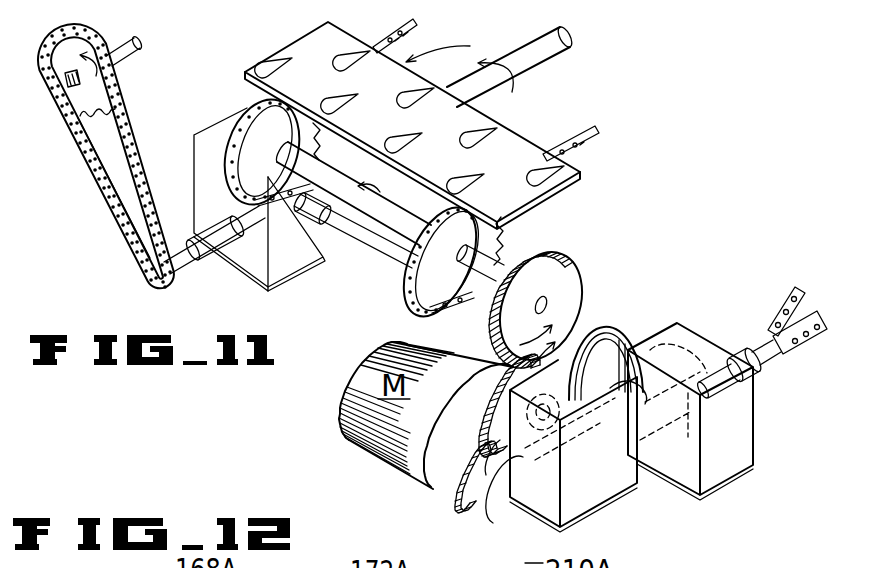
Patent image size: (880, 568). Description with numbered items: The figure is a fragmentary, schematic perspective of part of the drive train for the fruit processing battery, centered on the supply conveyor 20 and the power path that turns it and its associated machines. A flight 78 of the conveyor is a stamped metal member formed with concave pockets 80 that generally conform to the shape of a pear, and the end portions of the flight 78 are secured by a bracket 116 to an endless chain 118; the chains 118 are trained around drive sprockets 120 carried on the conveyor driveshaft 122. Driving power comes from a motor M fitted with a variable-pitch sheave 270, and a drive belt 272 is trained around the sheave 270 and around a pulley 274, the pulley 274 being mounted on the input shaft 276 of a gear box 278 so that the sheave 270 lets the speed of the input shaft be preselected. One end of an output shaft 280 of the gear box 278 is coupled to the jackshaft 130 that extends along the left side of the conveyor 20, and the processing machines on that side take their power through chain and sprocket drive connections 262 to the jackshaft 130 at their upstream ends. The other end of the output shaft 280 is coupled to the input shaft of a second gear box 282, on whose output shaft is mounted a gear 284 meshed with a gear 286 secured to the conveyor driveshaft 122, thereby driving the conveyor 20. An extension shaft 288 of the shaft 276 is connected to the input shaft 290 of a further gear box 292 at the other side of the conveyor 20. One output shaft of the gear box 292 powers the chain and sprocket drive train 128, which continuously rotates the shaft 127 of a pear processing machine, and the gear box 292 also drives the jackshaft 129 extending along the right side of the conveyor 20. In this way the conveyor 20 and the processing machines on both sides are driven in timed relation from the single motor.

The supply conveyor 20 is at (459, 44).
The supply conveyor flight 78 is at (287, 57).
The concave pocket 80 is at (410, 97).
The bracket 116 is at (245, 110).
The endless chain 118 is at (413, 33).
The drive sprocket 120 is at (313, 143).
The conveyor driveshaft 122 is at (407, 232).
The shaft 127 is at (163, 26).
The chain and sprocket drive train 128 is at (90, 167).
The jackshaft 129 is at (567, 43).
The jackshaft 130 is at (817, 317).
The chain and sprocket drive connection 262 is at (777, 310).
The variable-pitch sheave 270 is at (512, 510).
The drive belt 272 is at (440, 492).
The pulley 274 is at (602, 337).
The input shaft 276 is at (628, 344).
The gear box 278 is at (732, 430).
The output shaft 280 is at (742, 410).
The gear box 282 is at (603, 493).
The gear 284 is at (507, 368).
The gear 286 is at (570, 260).
The extension shaft 288 is at (357, 242).
The input shaft 290 is at (293, 207).
The gear box 292 is at (253, 262).